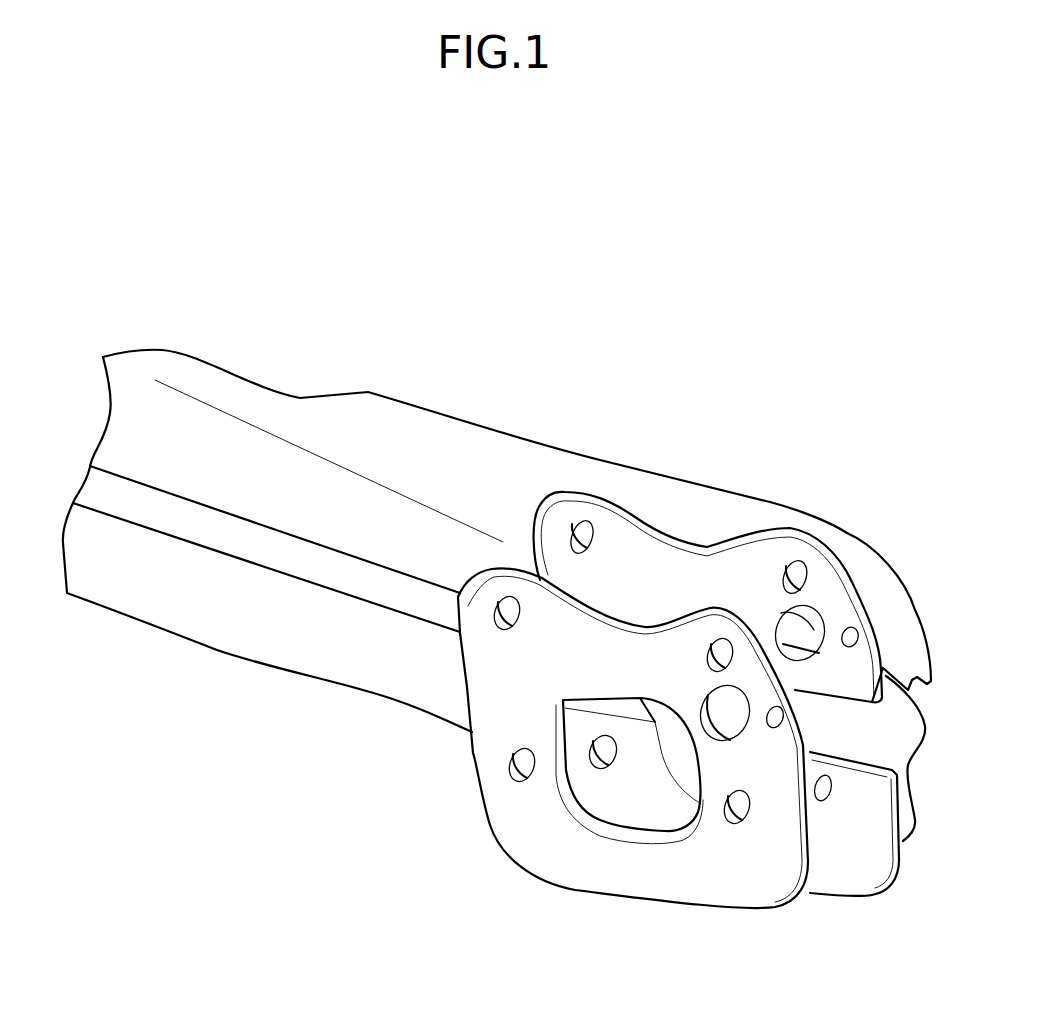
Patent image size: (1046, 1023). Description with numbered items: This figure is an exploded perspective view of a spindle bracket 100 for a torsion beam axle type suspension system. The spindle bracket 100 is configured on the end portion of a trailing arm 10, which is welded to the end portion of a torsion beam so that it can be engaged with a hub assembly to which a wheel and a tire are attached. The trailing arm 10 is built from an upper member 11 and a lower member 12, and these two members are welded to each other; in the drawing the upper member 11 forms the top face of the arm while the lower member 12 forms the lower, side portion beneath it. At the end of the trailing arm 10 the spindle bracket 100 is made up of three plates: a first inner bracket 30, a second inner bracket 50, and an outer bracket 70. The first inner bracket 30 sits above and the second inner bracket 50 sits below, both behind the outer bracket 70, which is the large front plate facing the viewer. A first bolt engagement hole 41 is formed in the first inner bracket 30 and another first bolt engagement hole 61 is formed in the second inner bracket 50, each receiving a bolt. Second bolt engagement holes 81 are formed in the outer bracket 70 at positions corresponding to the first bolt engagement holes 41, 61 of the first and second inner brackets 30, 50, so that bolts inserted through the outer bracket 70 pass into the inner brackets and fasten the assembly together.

The spindle bracket 100 is at (520, 167).
The trailing arm 10 is at (207, 690).
The upper member 11 is at (243, 453).
The lower member 12 is at (297, 643).
The first inner bracket 30 is at (713, 580).
The first bolt engagement hole 41 is at (568, 530).
The second inner bracket 50 is at (857, 867).
The first bolt engagement hole 61 is at (822, 795).
The outer bracket 70 is at (633, 867).
The second bolt engagement holes 81 is at (495, 607).